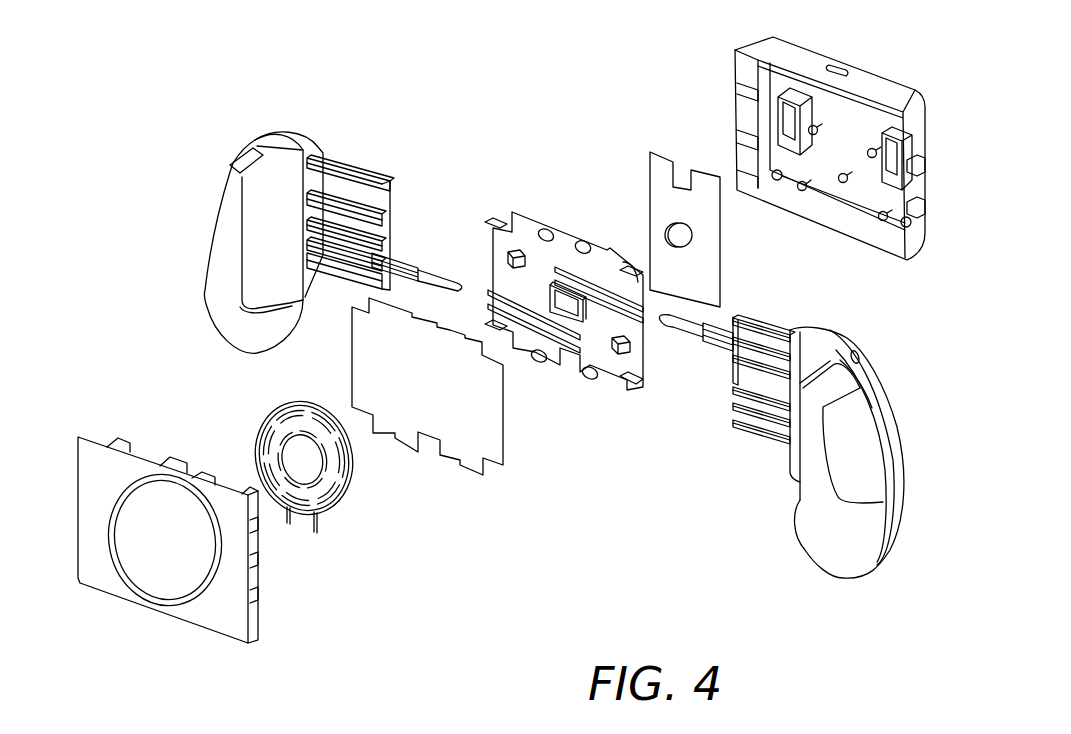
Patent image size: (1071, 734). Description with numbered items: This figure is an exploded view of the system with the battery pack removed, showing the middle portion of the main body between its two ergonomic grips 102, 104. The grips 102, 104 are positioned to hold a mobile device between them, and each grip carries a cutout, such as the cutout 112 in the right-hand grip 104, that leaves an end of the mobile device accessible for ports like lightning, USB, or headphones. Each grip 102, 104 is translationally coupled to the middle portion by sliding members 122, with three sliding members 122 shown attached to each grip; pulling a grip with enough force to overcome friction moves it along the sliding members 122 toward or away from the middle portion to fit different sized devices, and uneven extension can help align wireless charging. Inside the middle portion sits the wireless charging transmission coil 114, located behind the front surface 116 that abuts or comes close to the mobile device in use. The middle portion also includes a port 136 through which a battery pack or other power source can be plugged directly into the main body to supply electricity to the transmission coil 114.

The ergonomic grip 102 is at (210, 302).
The ergonomic grip 104 is at (818, 550).
The cutout 112 is at (855, 423).
The transmission coil 114 is at (265, 425).
The front surface 116 is at (104, 566).
The sliding members 122 is at (358, 277).
The port 136 is at (682, 168).